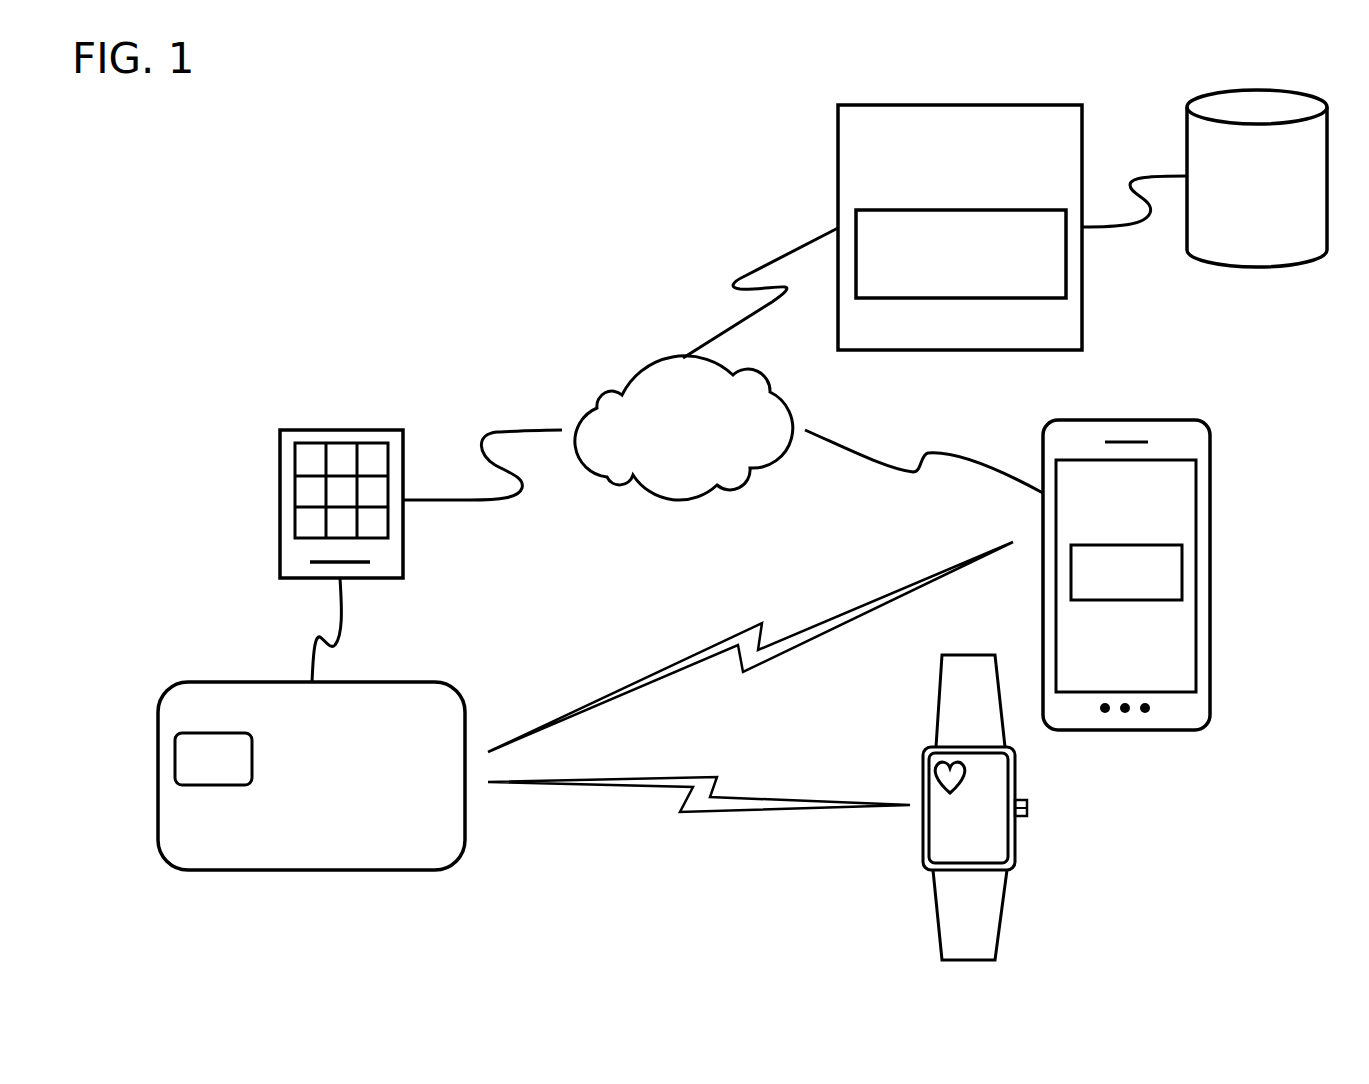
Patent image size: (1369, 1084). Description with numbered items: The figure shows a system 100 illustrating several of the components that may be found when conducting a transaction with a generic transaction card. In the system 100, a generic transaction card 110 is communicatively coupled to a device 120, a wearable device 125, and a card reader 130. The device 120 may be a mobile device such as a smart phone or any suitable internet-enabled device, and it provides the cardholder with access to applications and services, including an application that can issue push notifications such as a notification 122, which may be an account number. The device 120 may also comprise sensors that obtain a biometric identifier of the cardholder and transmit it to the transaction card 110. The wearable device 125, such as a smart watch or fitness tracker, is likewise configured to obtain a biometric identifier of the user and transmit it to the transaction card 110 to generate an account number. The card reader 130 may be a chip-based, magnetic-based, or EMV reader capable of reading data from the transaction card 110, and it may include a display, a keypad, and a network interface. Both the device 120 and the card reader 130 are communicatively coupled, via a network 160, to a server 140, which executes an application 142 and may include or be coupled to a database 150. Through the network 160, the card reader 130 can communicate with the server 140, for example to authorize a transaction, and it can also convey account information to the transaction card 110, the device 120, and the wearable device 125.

The system 100 is at (232, 266).
The generic transaction card 110 is at (158, 775).
The device 120 is at (1065, 418).
The notification 122 is at (1182, 570).
The wearable device 125 is at (1027, 808).
The card reader 130 is at (280, 500).
The server 140 is at (960, 227).
The application 142 is at (961, 254).
The database 150 is at (1257, 178).
The network 160 is at (684, 428).